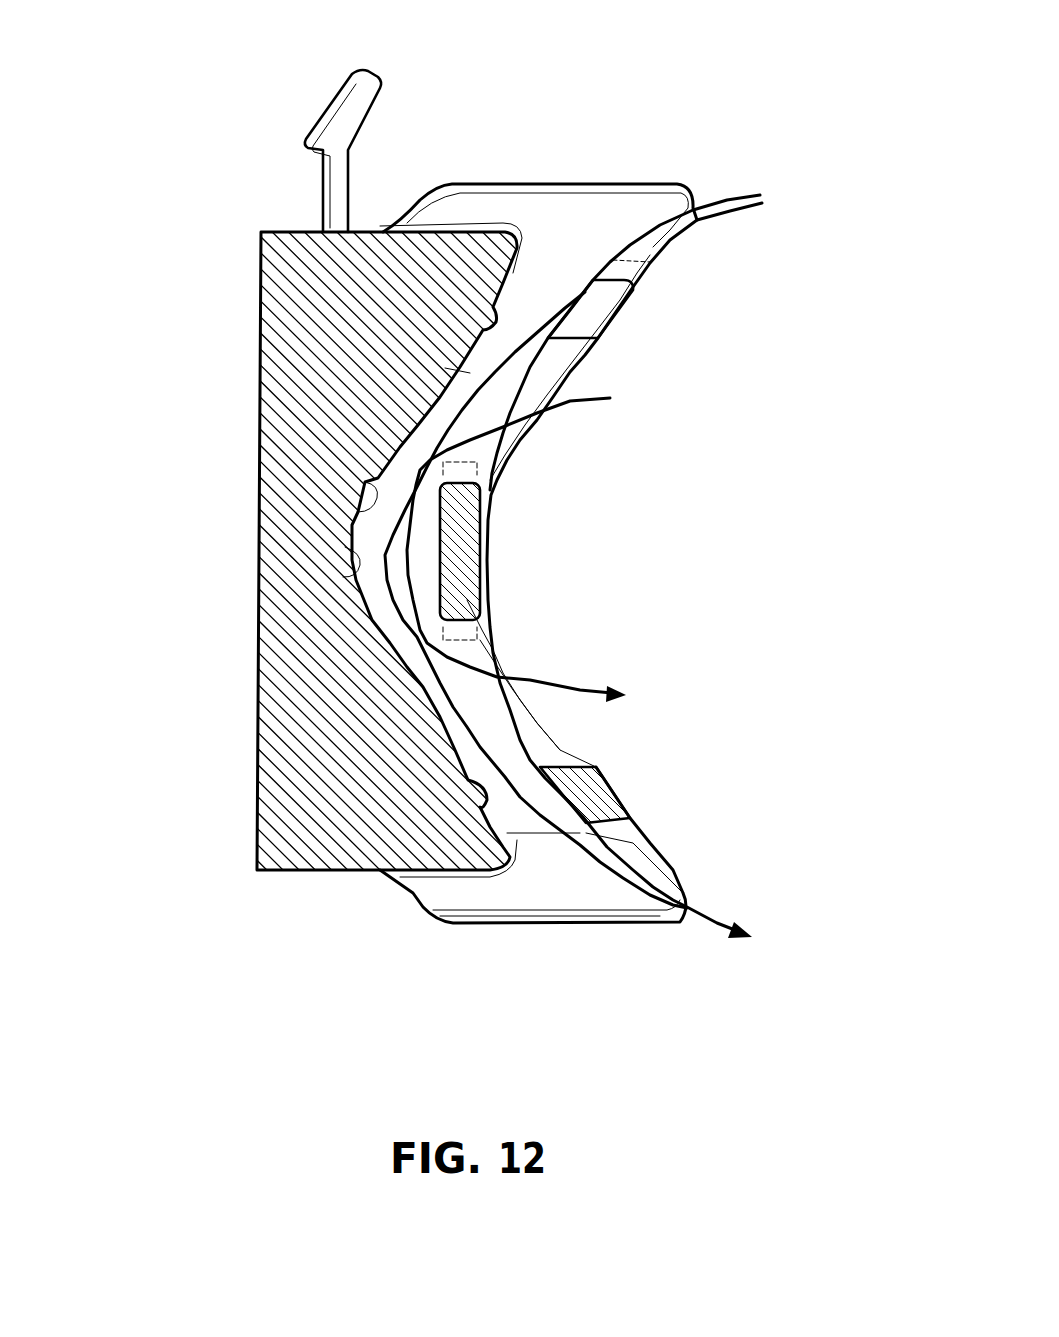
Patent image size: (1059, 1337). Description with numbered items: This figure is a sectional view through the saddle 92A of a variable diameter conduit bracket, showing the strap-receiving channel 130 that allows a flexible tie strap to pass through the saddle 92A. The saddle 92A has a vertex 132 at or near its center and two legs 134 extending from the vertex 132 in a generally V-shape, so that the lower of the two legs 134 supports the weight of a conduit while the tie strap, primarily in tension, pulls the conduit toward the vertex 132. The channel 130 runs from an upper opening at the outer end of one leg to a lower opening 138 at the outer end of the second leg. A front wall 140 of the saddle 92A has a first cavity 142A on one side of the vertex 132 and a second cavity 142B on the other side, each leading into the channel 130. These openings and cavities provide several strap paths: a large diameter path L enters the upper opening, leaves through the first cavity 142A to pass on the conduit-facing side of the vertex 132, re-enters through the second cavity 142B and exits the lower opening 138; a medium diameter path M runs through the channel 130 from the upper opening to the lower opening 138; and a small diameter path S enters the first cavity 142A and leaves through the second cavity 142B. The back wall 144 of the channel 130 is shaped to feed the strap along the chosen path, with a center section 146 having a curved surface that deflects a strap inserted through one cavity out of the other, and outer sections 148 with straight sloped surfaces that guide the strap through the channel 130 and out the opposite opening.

The saddle 92A is at (335, 872).
The strap-receiving channel 130 is at (523, 288).
The vertex 132 is at (480, 560).
The legs 134 is at (620, 793).
The lower opening 138 is at (547, 858).
The front wall 140 is at (483, 513).
The first cavity 142A is at (537, 433).
The second cavity 142B is at (577, 739).
The back wall 144 is at (365, 512).
The center section 146 is at (370, 568).
The outer sections 148 is at (478, 330).
The large diameter path L is at (527, 368).
The medium diameter path M is at (445, 368).
The small diameter path S is at (378, 575).